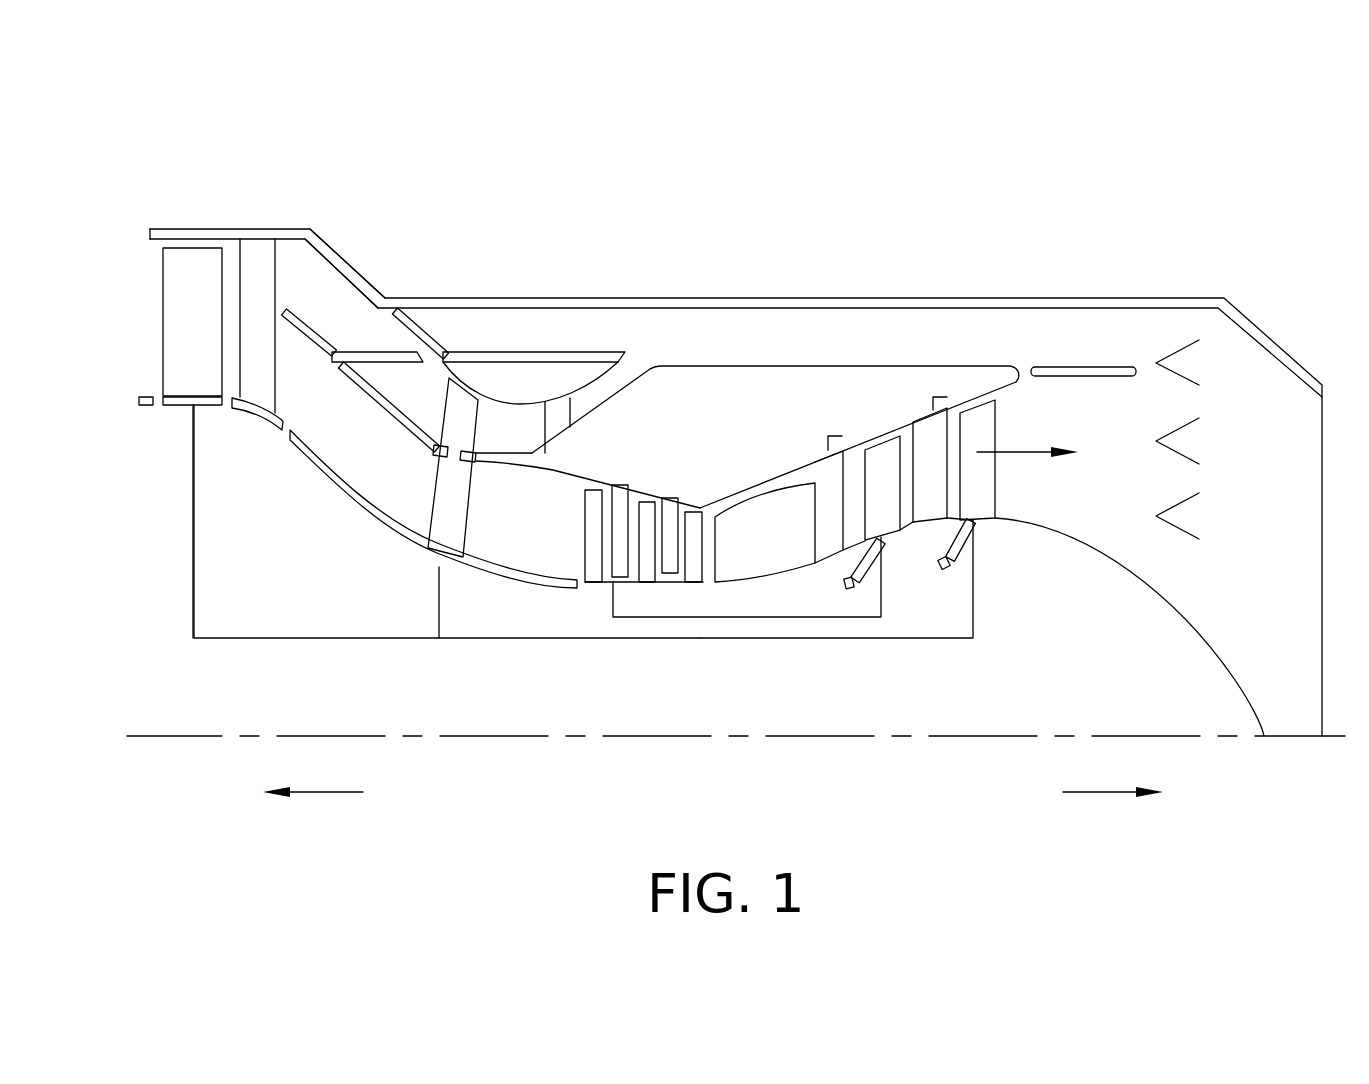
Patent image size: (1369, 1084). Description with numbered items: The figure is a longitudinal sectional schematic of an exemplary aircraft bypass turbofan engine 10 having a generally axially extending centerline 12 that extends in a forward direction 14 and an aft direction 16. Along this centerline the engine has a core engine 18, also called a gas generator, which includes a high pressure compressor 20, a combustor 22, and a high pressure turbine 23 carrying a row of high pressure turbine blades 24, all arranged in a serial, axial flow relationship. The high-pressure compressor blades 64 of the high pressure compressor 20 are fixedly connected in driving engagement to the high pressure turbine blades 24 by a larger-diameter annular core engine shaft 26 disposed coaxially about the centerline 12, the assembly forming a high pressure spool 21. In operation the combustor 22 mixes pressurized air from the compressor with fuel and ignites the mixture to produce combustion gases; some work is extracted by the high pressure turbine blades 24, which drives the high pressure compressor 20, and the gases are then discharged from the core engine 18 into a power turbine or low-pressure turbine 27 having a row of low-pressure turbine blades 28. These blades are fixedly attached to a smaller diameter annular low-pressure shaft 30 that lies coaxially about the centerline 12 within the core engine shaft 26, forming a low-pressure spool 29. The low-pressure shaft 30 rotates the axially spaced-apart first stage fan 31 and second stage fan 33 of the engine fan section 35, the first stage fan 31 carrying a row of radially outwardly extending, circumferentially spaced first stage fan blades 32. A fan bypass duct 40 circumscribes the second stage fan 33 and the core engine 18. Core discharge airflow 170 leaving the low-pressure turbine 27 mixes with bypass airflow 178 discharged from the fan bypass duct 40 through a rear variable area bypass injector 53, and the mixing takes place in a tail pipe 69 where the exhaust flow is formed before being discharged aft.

The turbofan engine 10 is at (690, 278).
The centerline 12 is at (1116, 736).
The forward direction 14 is at (312, 792).
The aft direction 16 is at (1115, 793).
The core engine 18 is at (748, 480).
The high pressure compressor 20 is at (627, 478).
The high pressure spool 21 is at (715, 630).
The combustor 22 is at (784, 547).
The high pressure turbine 23 is at (838, 566).
The high pressure turbine blades 24 is at (887, 458).
The core engine shaft 26 is at (641, 618).
The low-pressure turbine 27 is at (917, 556).
The low-pressure turbine blades 28 is at (988, 495).
The low-pressure spool 29 is at (522, 680).
The low-pressure shaft 30 is at (805, 638).
The first stage fan 31 is at (178, 178).
The first stage fan blades 32 is at (209, 346).
The second stage fan 33 is at (468, 372).
The engine fan section 35 is at (397, 275).
The fan bypass duct 40 is at (870, 348).
The rear variable area bypass injector 53 is at (1063, 366).
The high-pressure compressor blades 64 is at (649, 508).
The tail pipe 69 is at (1034, 297).
The core discharge airflow 170 is at (1030, 450).
The bypass airflow 178 is at (918, 332).